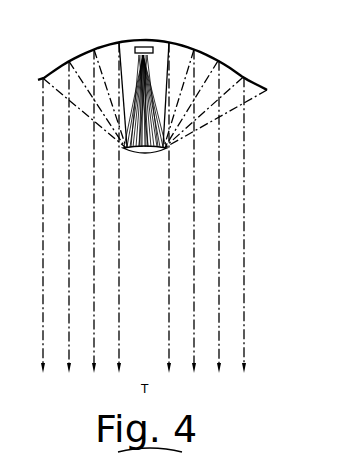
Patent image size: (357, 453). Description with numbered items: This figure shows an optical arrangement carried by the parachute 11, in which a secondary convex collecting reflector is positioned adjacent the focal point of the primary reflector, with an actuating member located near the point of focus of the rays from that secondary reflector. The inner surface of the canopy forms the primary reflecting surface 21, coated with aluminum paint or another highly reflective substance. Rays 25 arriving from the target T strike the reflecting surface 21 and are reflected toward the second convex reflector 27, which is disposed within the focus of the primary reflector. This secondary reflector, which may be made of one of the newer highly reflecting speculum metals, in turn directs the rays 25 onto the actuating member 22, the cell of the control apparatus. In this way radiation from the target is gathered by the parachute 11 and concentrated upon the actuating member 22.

The parachute 11 is at (118, 37).
The reflecting surface 21 is at (90, 50).
The actuating member 22 is at (153, 52).
The rays 25 is at (192, 272).
The second convex reflector 27 is at (167, 150).